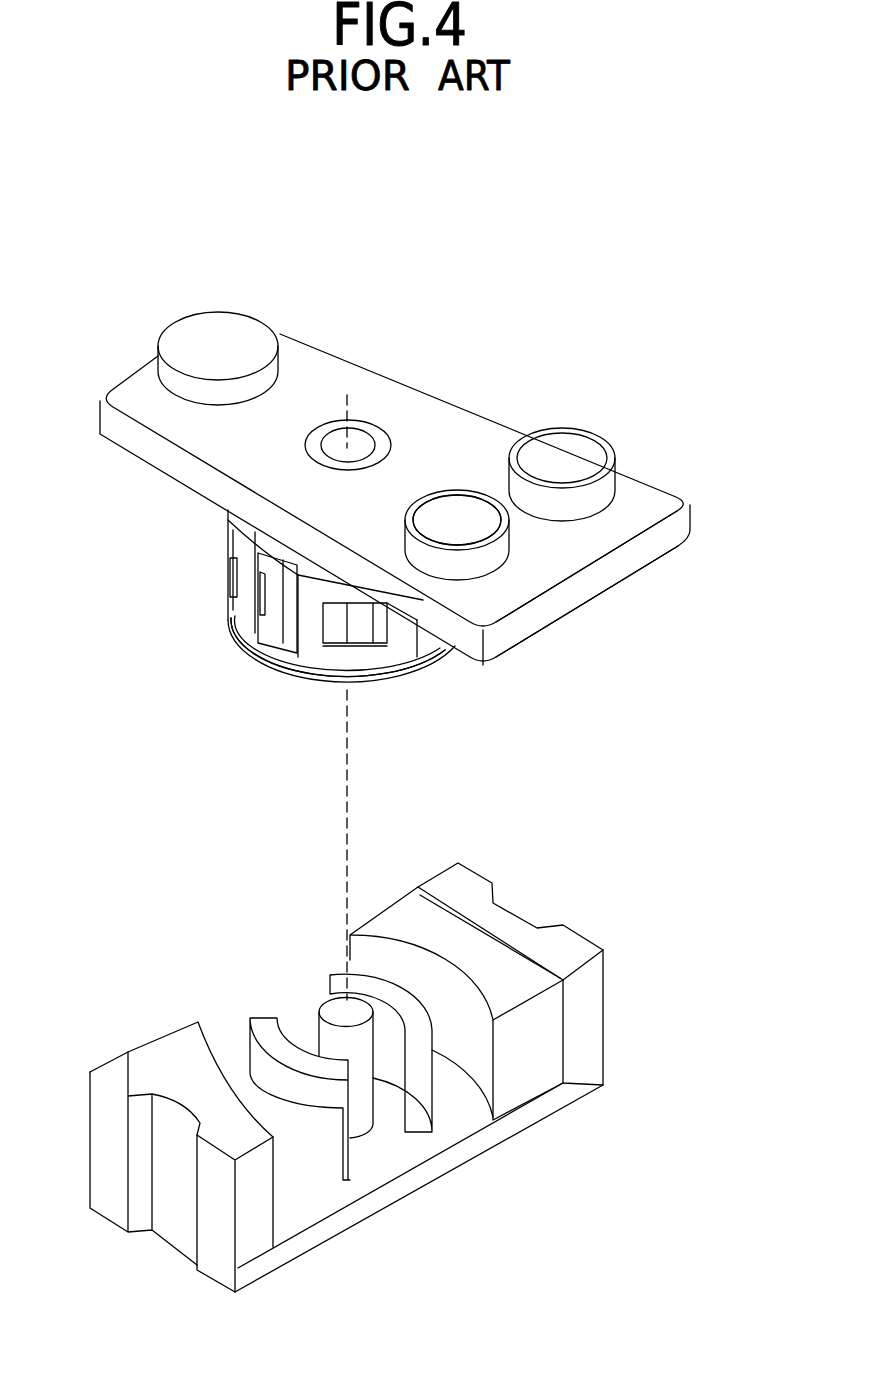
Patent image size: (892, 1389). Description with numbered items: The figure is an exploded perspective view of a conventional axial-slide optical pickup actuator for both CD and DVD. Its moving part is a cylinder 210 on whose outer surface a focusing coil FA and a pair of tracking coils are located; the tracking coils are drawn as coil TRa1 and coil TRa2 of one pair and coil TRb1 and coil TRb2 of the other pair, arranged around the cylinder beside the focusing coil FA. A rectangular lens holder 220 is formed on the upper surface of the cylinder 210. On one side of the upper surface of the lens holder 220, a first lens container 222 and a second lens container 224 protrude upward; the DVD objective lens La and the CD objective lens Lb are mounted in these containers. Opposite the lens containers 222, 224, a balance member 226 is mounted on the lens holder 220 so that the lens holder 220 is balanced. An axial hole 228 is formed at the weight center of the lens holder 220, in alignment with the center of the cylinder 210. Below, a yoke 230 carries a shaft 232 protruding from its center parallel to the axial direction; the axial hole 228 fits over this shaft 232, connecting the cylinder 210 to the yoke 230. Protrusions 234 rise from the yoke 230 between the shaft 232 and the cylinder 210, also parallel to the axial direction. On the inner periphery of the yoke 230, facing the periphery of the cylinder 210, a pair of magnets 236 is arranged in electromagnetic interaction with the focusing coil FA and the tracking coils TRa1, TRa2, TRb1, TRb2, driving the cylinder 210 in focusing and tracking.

The lens holder 220 is at (623, 558).
The first lens container 222 is at (612, 490).
The second lens container 224 is at (495, 560).
The balance member 226 is at (186, 332).
The axial hole 228 is at (383, 437).
The DVD objective lens La is at (457, 508).
The CD objective lens Lb is at (582, 450).
The cylinder 210 is at (343, 677).
The focusing coil FA is at (270, 665).
The tracking coil TRa1 is at (235, 607).
The tracking coil TRb1 is at (268, 633).
The tracking coil TRa2 is at (388, 660).
The tracking coil TRb2 is at (418, 648).
The yoke 230 is at (587, 1005).
The shaft 232 is at (323, 1000).
The protrusions 234 is at (347, 1160).
The magnets 236 is at (535, 1072).